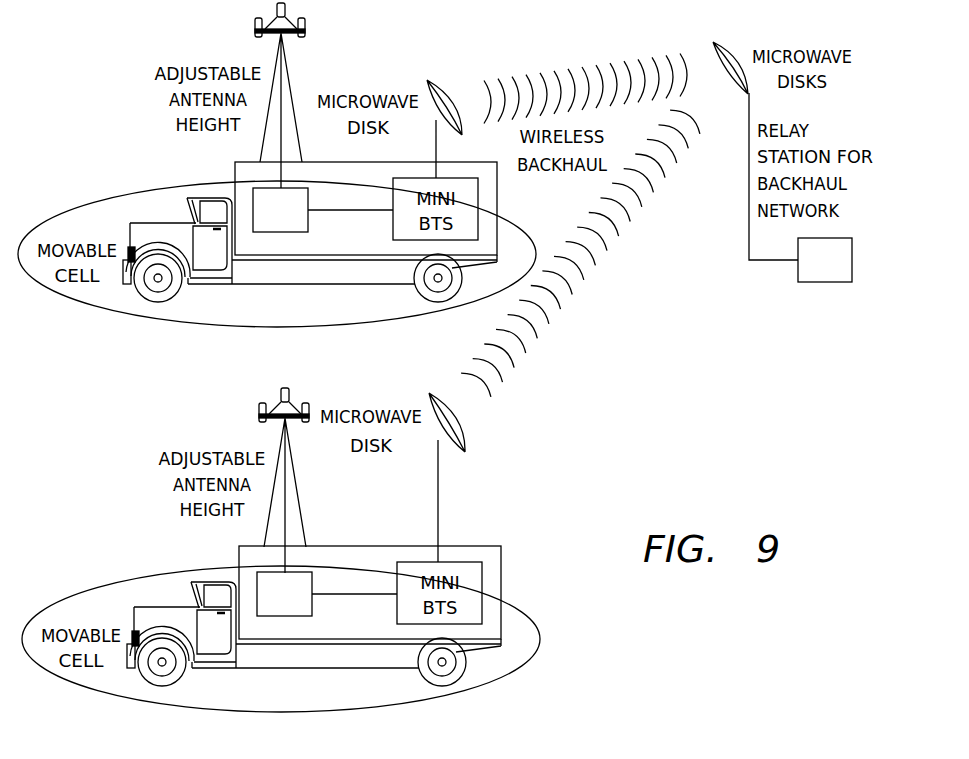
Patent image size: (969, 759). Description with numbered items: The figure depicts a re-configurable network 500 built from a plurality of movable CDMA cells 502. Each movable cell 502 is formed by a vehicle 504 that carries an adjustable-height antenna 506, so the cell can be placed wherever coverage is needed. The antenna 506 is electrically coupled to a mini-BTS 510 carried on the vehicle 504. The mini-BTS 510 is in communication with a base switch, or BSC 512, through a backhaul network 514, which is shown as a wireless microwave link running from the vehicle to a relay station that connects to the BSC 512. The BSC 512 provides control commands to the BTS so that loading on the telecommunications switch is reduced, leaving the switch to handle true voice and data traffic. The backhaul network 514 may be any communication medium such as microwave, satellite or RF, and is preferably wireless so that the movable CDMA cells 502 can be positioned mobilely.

The re-configurable network 500 is at (645, 420).
The movable CDMA cell 502 is at (123, 208).
The vehicle 504 is at (498, 192).
The adjustable-height antenna 506 is at (255, 22).
The mini-BTS 510 is at (393, 222).
The base switch (BSC) 512 is at (825, 283).
The backhaul network 514 is at (748, 238).